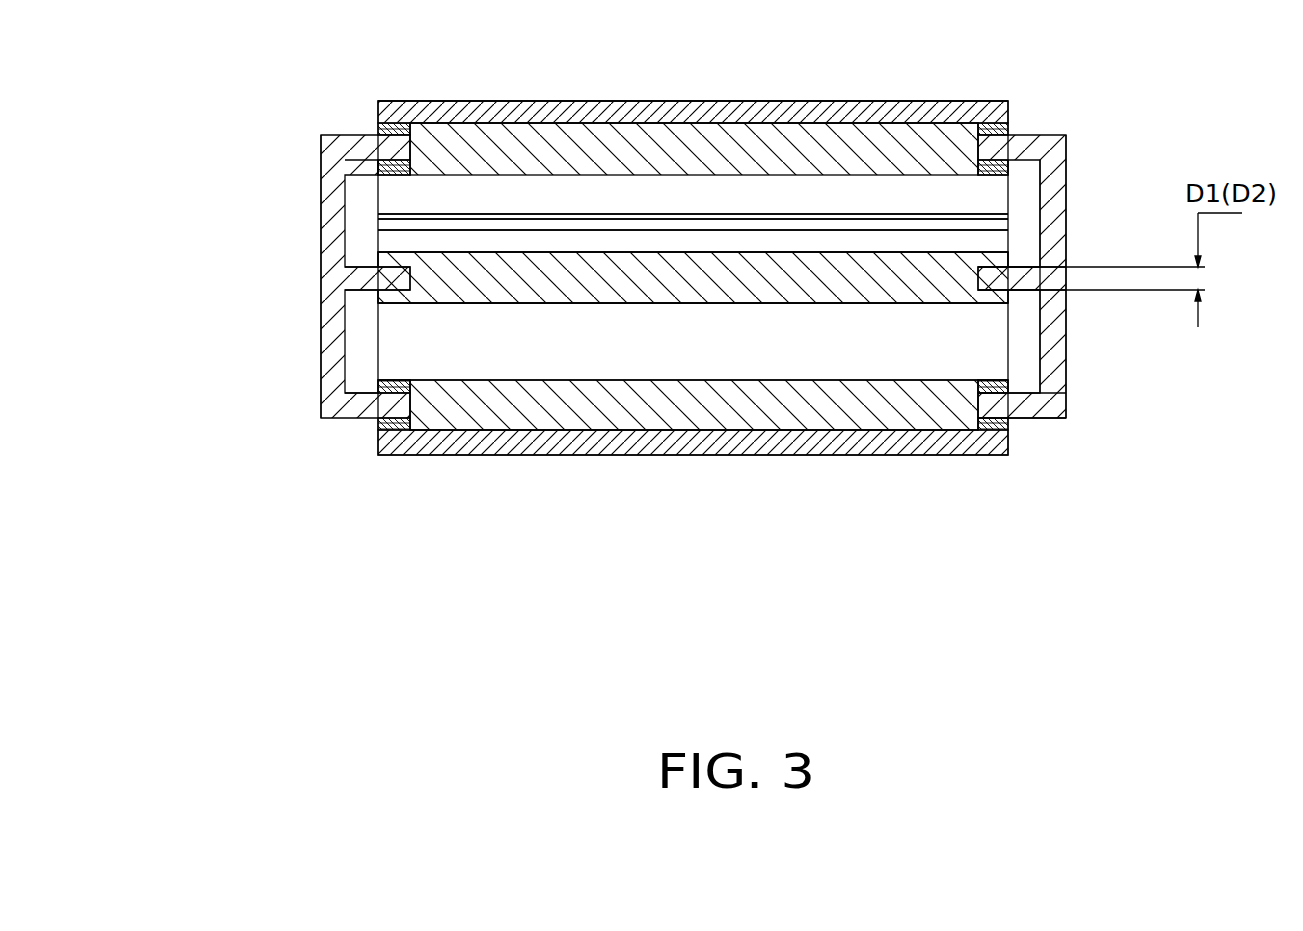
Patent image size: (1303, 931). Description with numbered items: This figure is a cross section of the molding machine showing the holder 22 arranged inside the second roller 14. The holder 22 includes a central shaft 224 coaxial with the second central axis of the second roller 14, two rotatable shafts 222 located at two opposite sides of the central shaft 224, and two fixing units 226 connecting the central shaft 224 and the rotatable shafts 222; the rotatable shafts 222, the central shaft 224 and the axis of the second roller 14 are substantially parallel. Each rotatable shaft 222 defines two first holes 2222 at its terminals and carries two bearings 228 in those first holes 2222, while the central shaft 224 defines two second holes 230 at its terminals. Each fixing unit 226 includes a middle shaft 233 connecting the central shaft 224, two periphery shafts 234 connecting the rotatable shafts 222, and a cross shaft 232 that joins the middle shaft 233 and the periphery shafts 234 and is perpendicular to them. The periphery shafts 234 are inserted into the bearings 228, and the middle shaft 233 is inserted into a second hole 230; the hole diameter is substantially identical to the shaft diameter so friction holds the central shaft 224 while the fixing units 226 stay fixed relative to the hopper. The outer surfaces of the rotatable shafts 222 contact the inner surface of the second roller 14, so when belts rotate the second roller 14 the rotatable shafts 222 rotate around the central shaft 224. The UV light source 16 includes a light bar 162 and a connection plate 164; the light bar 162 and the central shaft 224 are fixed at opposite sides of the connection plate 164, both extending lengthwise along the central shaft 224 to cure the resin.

The second roller 14 is at (410, 113).
The UV light source 16 is at (222, 137).
The light bar 162 is at (410, 222).
The connection plate 164 is at (387, 242).
The holder 22 is at (305, 238).
The rotatable shaft 222 is at (530, 143).
The first hole 2222 is at (985, 440).
The central shaft 224 is at (783, 283).
The fixing unit 226 is at (338, 310).
The bearing 228 is at (1010, 130).
The second hole 230 is at (1008, 258).
The cross shaft 232 is at (1055, 355).
The middle shaft 233 is at (1018, 284).
The periphery shaft 234 is at (1020, 405).